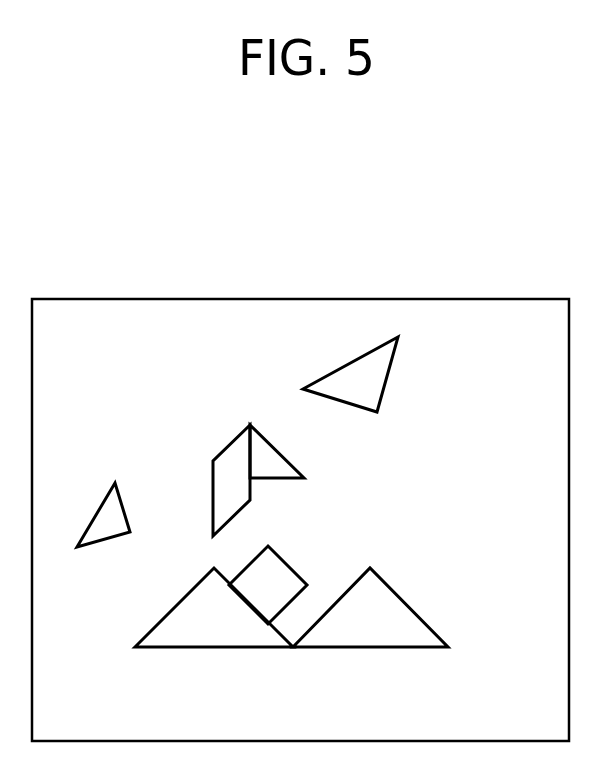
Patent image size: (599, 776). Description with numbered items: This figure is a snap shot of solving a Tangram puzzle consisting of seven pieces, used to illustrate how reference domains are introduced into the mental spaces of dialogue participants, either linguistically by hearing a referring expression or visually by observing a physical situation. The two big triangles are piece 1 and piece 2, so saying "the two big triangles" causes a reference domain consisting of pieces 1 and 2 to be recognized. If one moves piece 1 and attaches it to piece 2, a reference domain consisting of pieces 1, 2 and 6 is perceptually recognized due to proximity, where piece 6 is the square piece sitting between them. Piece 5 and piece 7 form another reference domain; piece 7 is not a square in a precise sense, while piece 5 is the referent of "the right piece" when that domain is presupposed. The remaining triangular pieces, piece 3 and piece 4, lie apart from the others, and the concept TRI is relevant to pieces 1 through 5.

The piece 1 is at (370, 607).
The piece 2 is at (214, 607).
The piece 3 is at (350, 374).
The piece 4 is at (103, 515).
The piece 5 is at (277, 451).
The piece 6 is at (268, 585).
The piece 7 is at (231, 480).